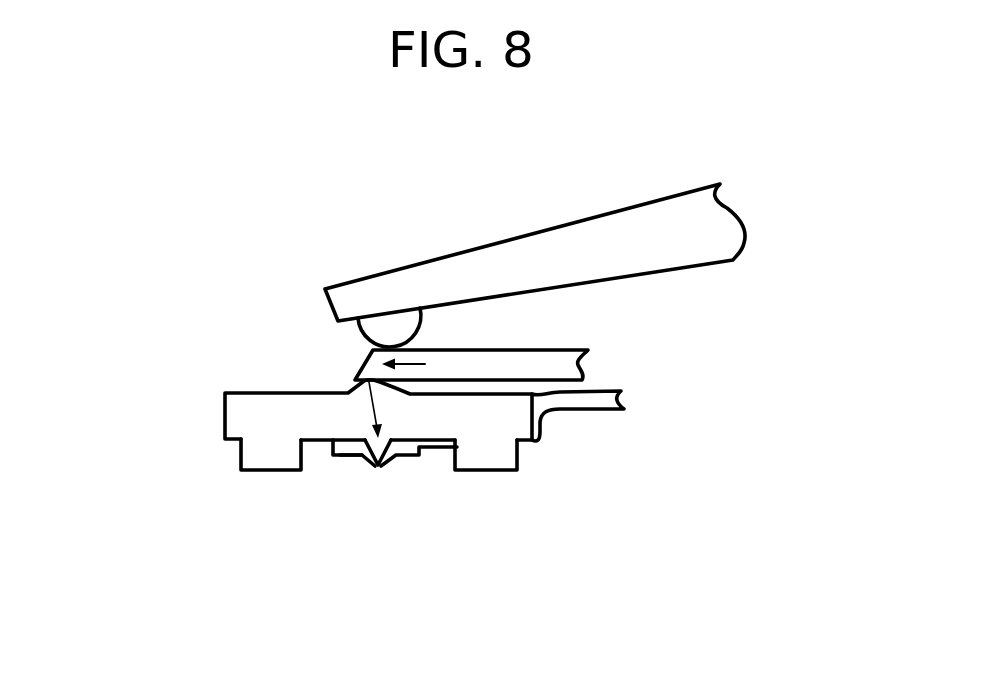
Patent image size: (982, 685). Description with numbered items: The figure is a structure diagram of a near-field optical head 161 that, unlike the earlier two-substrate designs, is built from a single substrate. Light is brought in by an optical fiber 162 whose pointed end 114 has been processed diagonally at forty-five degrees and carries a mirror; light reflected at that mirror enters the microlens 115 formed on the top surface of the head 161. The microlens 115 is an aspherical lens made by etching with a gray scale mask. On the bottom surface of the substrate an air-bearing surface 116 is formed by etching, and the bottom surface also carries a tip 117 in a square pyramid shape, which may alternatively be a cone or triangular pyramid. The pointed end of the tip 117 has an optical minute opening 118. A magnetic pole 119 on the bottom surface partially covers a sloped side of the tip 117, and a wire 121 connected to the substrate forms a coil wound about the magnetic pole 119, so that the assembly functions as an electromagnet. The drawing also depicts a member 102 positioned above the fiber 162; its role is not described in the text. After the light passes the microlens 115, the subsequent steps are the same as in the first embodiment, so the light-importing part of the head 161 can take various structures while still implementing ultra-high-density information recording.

The pressing arm 102 is at (587, 243).
The pointed end 114 is at (362, 365).
The optical fiber 162 is at (564, 363).
The near-field optical head 161 is at (187, 380).
The air-bearing surface 116 is at (265, 460).
The microlens 115 is at (355, 397).
The optical minute opening 118 is at (388, 465).
The magnetic pole 119 is at (344, 459).
The tip 117 is at (392, 467).
The wire 121 is at (593, 412).